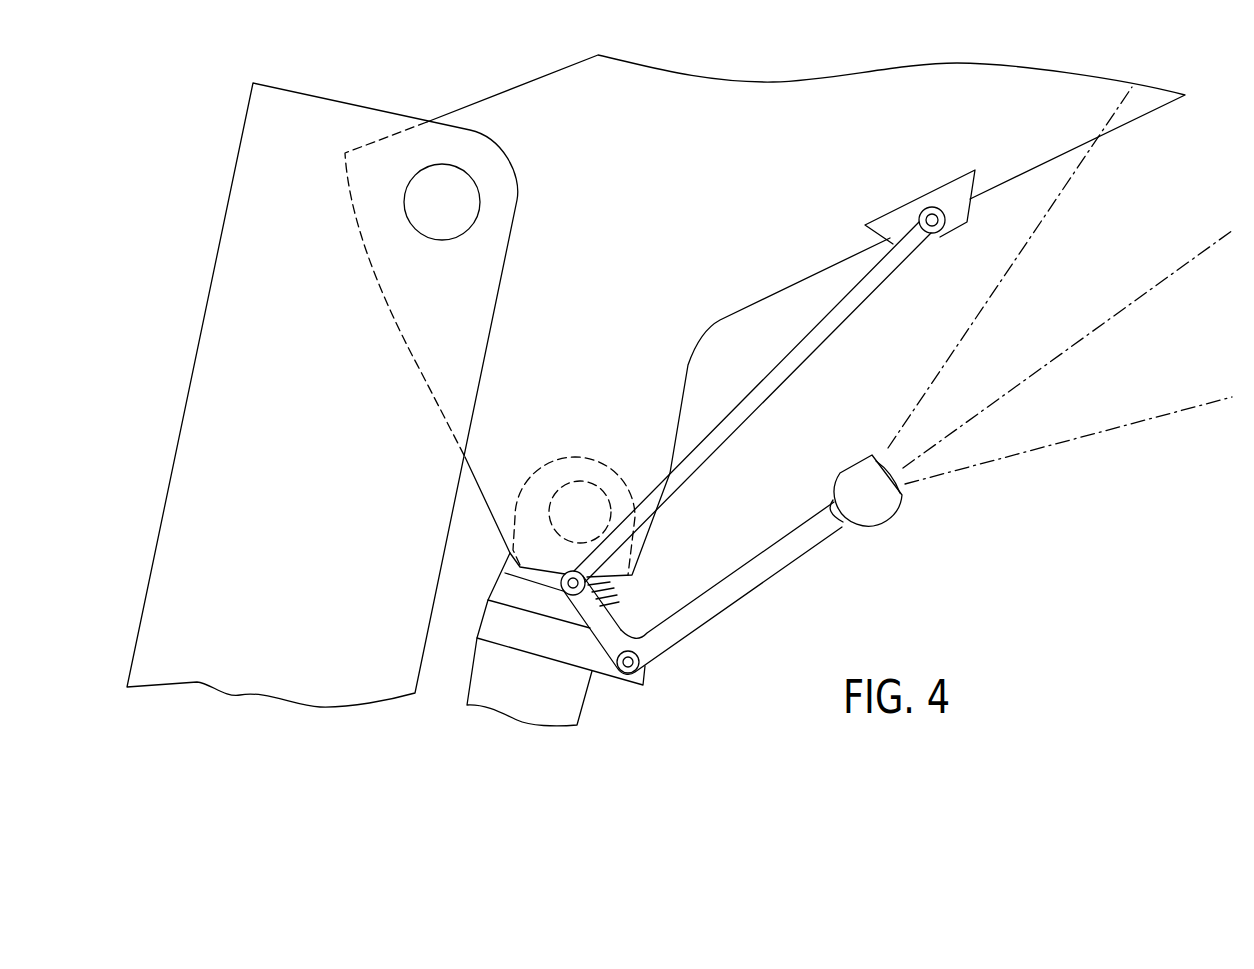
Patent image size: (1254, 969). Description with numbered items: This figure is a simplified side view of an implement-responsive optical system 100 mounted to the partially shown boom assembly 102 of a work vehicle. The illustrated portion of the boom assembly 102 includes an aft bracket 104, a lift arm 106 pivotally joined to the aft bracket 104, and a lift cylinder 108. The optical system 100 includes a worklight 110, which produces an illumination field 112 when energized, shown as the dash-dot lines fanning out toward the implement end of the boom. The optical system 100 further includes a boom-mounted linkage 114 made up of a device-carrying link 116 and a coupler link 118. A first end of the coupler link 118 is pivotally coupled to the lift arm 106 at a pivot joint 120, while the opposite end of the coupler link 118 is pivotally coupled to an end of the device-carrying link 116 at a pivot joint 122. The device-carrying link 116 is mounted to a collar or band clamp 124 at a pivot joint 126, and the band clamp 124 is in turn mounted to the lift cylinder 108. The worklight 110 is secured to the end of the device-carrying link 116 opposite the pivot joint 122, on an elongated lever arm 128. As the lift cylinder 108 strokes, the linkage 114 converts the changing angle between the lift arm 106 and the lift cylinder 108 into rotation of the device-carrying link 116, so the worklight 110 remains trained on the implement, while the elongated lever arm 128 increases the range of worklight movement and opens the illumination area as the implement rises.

The implement-responsive optical system 100 is at (934, 536).
The boom assembly 102 is at (322, 395).
The aft bracket 104 is at (303, 141).
The lift arm 106 is at (618, 98).
The lift cylinder 108 is at (536, 672).
The worklight 110 is at (1031, 335).
The illumination field 112 is at (1042, 335).
The boom-mounted linkage 114 is at (768, 442).
The device-carrying link 116 is at (702, 588).
The coupler link 118 is at (836, 328).
The pivot joint 120 is at (921, 210).
The pivot joint 122 is at (617, 595).
The band clamp 124 is at (500, 625).
The pivot joint 126 is at (647, 680).
The elongated lever arm 128 is at (788, 545).